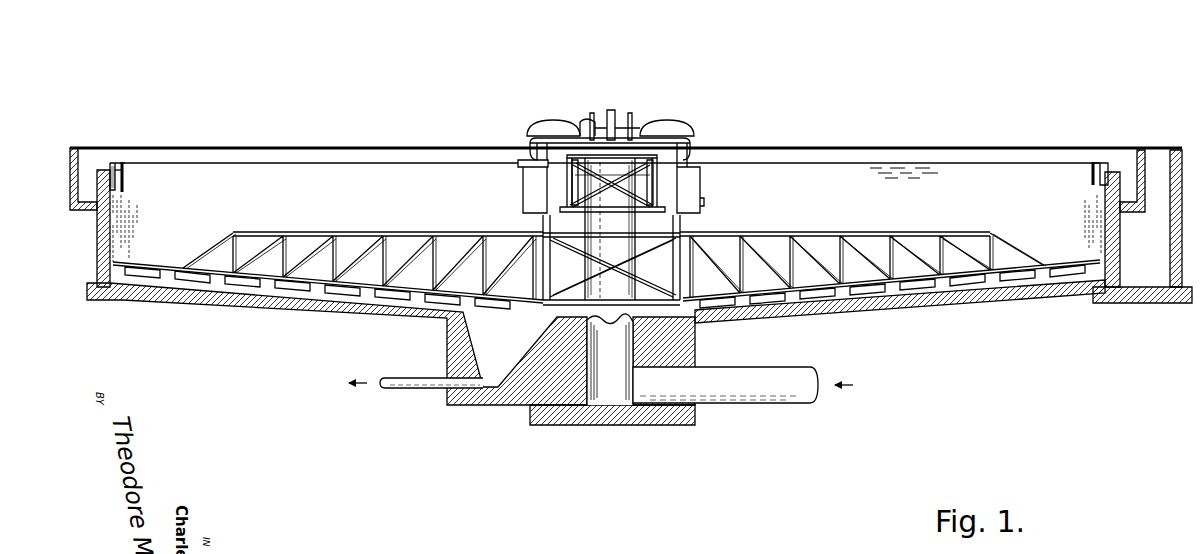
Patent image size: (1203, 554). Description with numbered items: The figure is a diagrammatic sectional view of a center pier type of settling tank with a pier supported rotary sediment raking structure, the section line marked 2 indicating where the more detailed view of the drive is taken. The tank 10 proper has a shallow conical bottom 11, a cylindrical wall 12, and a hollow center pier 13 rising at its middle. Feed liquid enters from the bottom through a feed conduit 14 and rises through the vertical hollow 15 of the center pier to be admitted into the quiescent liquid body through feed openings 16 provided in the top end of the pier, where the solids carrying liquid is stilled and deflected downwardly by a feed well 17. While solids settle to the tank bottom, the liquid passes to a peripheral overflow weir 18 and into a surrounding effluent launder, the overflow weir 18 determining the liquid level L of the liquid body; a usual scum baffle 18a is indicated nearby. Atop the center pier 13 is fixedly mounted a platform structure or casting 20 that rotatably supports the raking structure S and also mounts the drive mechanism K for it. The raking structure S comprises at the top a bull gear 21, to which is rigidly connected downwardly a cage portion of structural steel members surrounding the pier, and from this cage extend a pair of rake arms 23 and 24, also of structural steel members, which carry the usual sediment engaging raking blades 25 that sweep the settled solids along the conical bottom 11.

The tank 10 is at (932, 146).
The shallow conical bottom 11 is at (852, 313).
The cylindrical wall 12 is at (97, 237).
The hollow center pier 13 is at (572, 268).
The feed conduit 14 is at (768, 367).
The vertical hollow 15 is at (610, 378).
The feed openings 16 is at (523, 182).
The feed well 17 is at (702, 193).
The peripheral overflow weir 18 is at (121, 160).
The scum baffle 18a is at (124, 171).
The platform structure 20 is at (648, 163).
The bull gear 21 is at (692, 146).
The rake arm 23 is at (868, 232).
The rake arm 24 is at (440, 232).
The raking blades 25 is at (912, 302).
The drive mechanism K is at (616, 102).
The liquid level L is at (990, 165).
The rake structure S is at (702, 232).
The section line 2- 2 is at (496, 30).